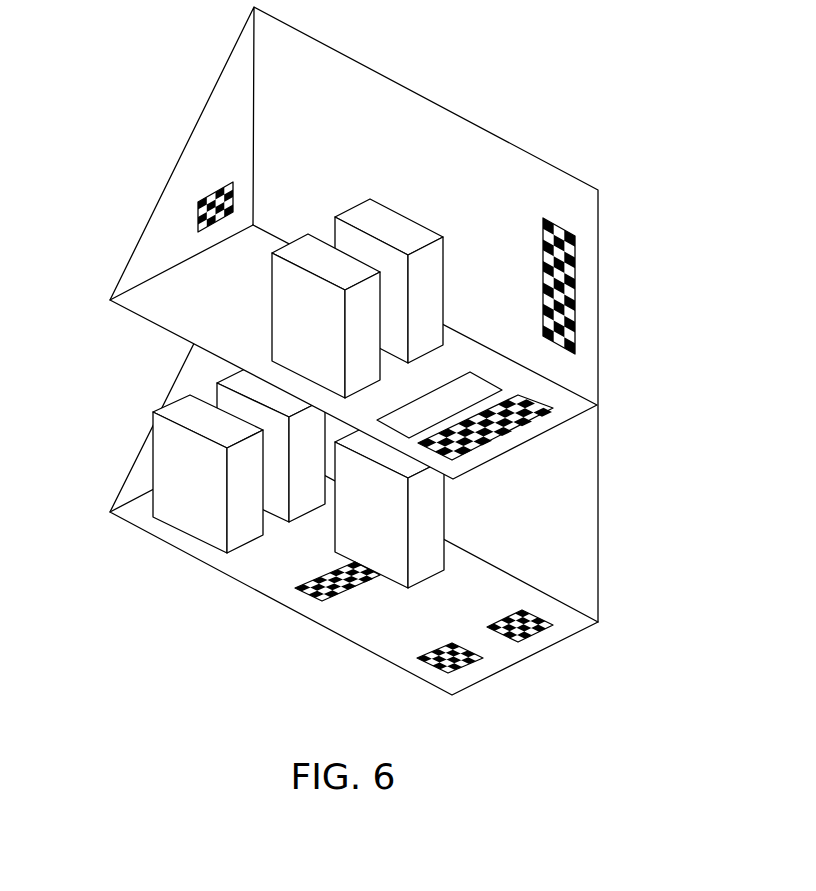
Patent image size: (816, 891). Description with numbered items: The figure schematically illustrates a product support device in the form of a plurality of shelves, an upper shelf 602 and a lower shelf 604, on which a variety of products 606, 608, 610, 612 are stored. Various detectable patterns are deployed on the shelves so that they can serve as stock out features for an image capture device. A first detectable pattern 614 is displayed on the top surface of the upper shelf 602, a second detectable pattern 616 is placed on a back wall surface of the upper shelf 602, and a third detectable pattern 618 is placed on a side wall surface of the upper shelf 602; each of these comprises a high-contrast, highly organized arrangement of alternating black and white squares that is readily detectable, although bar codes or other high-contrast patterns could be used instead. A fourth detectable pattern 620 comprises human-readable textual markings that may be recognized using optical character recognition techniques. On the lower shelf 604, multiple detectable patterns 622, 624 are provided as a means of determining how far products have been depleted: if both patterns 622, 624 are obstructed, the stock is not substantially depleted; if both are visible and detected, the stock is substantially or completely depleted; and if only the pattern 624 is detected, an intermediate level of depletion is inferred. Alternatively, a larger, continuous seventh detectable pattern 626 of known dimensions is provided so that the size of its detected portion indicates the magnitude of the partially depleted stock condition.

The upper shelf 602 is at (128, 310).
The shelf 604 is at (148, 537).
The product 606 is at (348, 207).
The product 608 is at (270, 327).
The product 610 is at (153, 477).
The product 612 is at (445, 532).
The first detectable pattern 614 is at (518, 428).
The second detectable pattern 616 is at (575, 288).
The third detectable pattern 618 is at (192, 212).
The fourth detectable pattern 620 is at (455, 373).
The detectable pattern 622 is at (540, 637).
The detectable pattern 624 is at (437, 668).
The seventh detectable pattern 626 is at (310, 598).